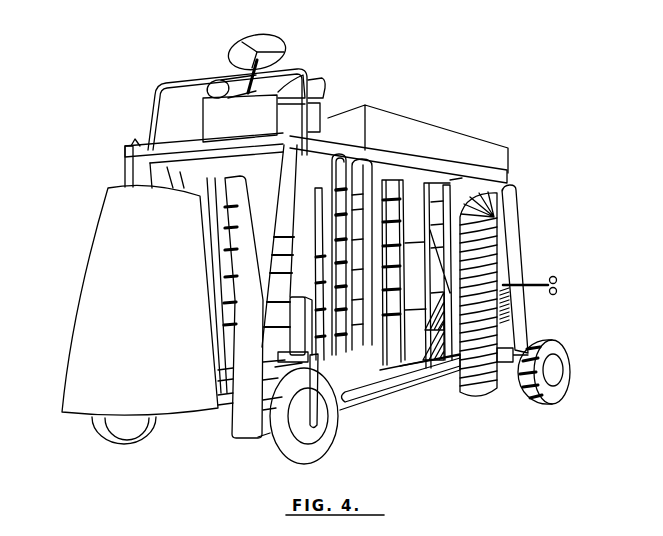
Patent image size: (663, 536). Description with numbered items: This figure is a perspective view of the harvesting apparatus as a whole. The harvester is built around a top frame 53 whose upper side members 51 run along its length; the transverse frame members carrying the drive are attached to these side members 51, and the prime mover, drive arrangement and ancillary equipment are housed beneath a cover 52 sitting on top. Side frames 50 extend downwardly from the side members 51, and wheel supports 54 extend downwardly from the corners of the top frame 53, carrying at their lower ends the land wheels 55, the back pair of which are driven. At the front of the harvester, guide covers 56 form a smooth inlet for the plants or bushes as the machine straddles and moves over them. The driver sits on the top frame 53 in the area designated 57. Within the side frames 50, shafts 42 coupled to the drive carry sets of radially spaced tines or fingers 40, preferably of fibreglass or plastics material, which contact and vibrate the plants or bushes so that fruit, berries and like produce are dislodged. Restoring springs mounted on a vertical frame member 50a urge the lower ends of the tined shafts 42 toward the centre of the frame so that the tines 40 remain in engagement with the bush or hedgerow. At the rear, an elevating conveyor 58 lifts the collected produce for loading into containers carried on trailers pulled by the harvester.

The radially spaced tines or fingers 40 is at (272, 333).
The shaft 42 is at (388, 380).
The side frames 50 is at (419, 368).
The vertical frame member 50a is at (420, 368).
The upper side members 51 is at (160, 166).
The cover 52 is at (436, 137).
The top frame 53 is at (190, 138).
The wheel supports 54 is at (121, 181).
The land wheels 55 is at (131, 447).
The guide covers 56 is at (160, 304).
The driver area 57 is at (300, 64).
The elevating conveyor 58 is at (503, 317).